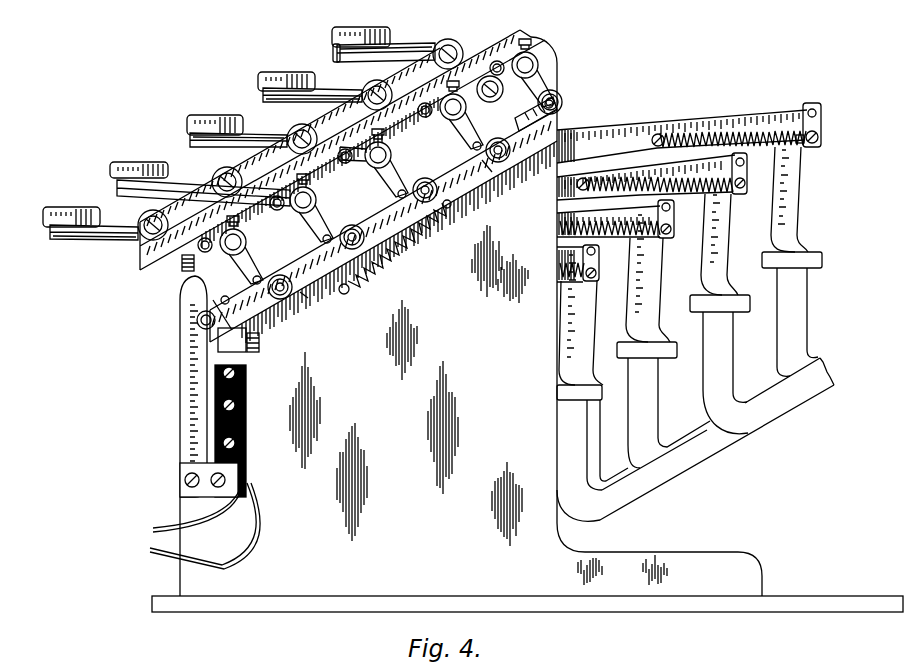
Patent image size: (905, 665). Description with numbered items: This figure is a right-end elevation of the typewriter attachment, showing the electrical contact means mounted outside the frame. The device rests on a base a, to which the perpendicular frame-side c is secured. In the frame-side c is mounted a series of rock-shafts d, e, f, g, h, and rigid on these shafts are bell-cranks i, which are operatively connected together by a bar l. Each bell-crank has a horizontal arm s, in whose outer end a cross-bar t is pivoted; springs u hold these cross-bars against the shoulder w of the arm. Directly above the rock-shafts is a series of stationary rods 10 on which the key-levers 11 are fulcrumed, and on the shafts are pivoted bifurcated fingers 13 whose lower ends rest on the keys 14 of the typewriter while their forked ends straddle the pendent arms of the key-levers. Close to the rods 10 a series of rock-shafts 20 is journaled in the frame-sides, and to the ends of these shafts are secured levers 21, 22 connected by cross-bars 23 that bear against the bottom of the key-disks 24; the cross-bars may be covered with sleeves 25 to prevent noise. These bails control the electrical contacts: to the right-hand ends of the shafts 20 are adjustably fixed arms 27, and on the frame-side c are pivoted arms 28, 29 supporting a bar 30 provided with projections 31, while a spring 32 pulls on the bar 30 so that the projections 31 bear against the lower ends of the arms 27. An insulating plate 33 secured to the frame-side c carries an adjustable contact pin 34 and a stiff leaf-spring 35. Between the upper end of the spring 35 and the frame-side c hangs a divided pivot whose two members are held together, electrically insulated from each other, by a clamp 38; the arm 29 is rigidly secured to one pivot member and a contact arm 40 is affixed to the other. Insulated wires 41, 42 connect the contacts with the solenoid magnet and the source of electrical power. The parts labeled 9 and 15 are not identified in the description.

The bracket arm end 9 is at (824, 360).
The stationary rods 10 is at (418, 112).
The key-levers 11 is at (404, 44).
The bifurcated fingers 13 is at (790, 205).
The keys 14 is at (586, 420).
The lower spring bar 15 is at (605, 284).
The rock-shafts 20 is at (441, 113).
The levers 21 is at (511, 50).
The levers 22 is at (374, 58).
The cross-bars 23 is at (345, 58).
The key-disks 24 is at (332, 36).
The sleeves 25 is at (337, 50).
The arms 27 is at (546, 96).
The arm 28 is at (536, 139).
The arm 29 is at (232, 302).
The bar 30 is at (314, 303).
The projections 31 is at (562, 103).
The spring 32 is at (397, 245).
The plate 33 is at (244, 457).
The adjustable contact pin 34 is at (262, 342).
The stiff leaf-spring 35 is at (183, 386).
The clamp 38 is at (182, 283).
The contact arm 40 is at (198, 316).
The insulated wire 41 is at (152, 530).
The insulated wire 42 is at (150, 550).
The base a is at (612, 612).
The frame-side c is at (451, 313).
The rock-shaft d is at (255, 326).
The rock-shaft e is at (352, 241).
The rock-shaft f is at (342, 283).
The rock-shaft g is at (452, 217).
The rock-shaft h is at (494, 173).
The bell-cranks i is at (364, 92).
The bar l is at (448, 38).
The horizontal arm s is at (611, 130).
The cross-bars t is at (822, 116).
The springs u is at (690, 125).
The shoulder w is at (803, 144).